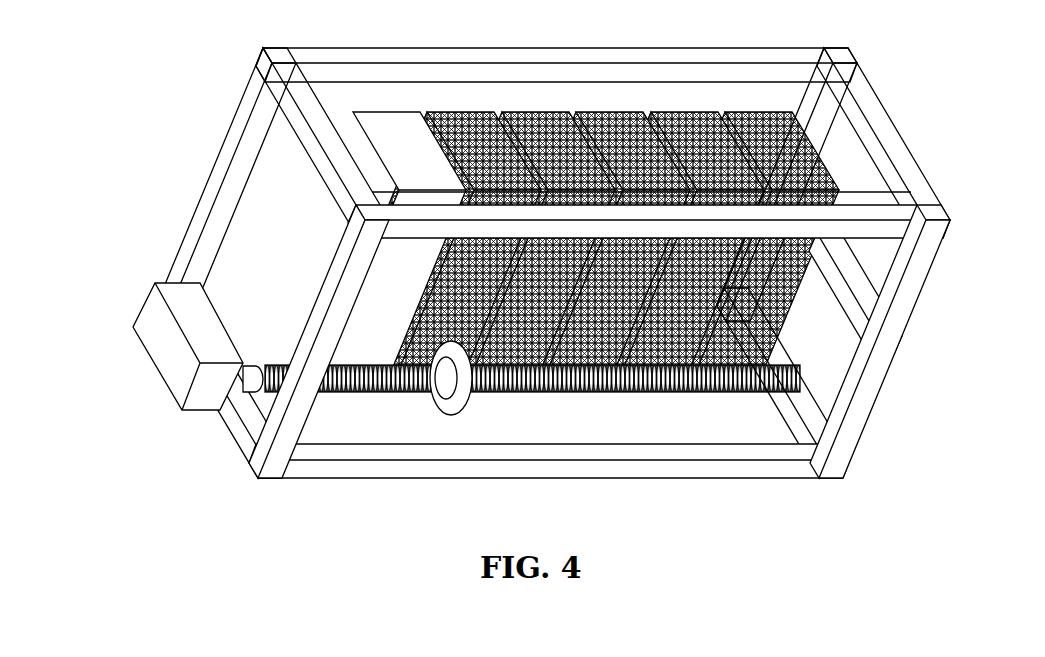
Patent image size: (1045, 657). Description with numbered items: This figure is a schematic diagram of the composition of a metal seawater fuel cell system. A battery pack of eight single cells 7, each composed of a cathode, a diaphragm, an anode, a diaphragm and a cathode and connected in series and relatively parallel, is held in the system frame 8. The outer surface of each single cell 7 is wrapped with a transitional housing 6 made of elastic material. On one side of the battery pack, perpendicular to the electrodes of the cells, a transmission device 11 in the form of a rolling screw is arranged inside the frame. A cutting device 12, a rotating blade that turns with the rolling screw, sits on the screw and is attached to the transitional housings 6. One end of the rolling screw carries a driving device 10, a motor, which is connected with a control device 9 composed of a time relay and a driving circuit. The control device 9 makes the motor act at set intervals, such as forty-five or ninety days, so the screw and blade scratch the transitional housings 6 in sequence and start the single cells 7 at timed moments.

The transitional housing 6 is at (540, 125).
The single cell 7 is at (392, 148).
The system frame 8 is at (832, 76).
The control device 9 is at (188, 378).
The driving device 10 is at (247, 390).
The transmission device 11 is at (357, 390).
The cutting device 12 is at (447, 407).